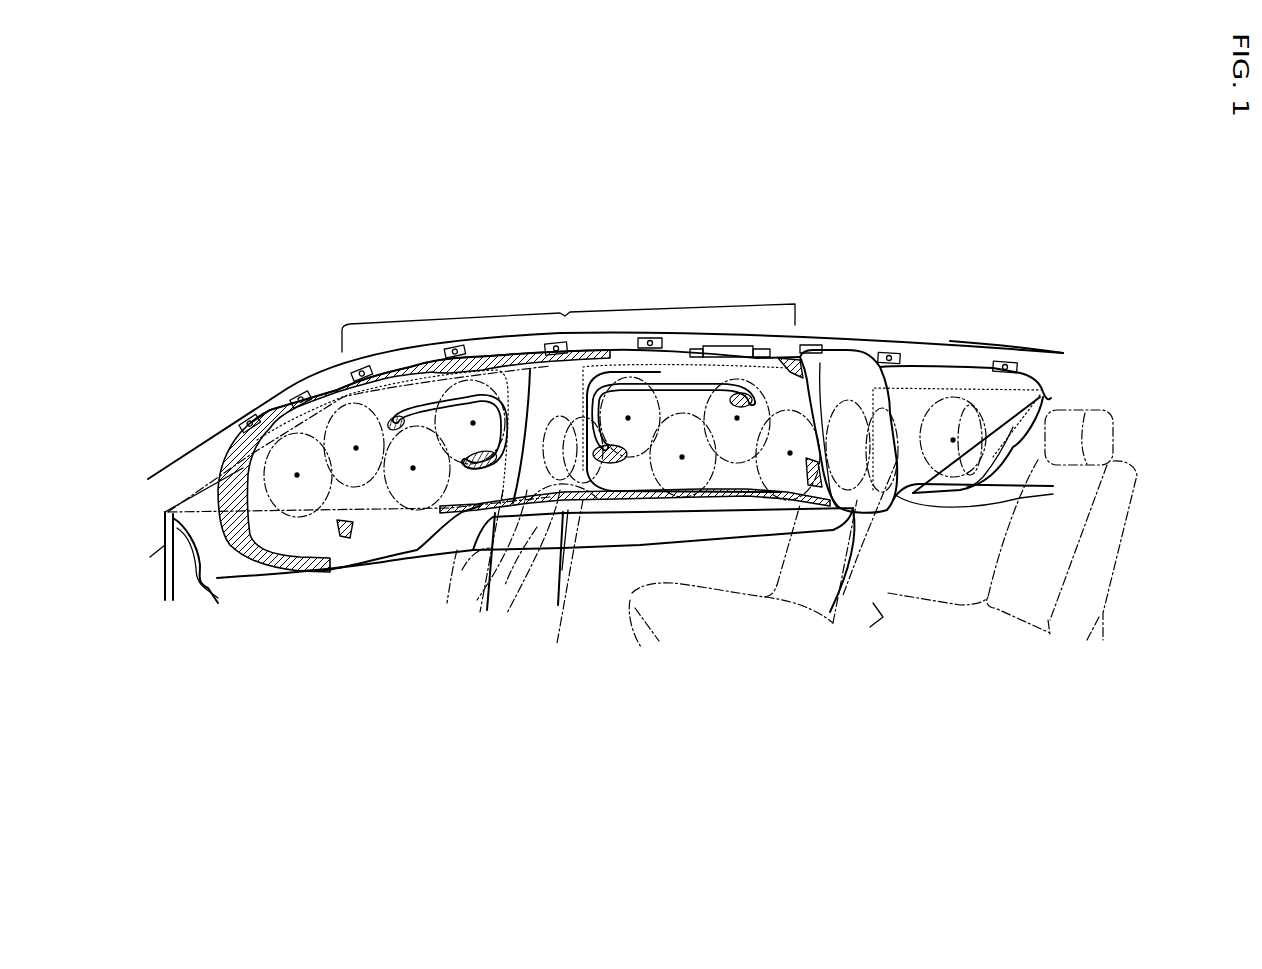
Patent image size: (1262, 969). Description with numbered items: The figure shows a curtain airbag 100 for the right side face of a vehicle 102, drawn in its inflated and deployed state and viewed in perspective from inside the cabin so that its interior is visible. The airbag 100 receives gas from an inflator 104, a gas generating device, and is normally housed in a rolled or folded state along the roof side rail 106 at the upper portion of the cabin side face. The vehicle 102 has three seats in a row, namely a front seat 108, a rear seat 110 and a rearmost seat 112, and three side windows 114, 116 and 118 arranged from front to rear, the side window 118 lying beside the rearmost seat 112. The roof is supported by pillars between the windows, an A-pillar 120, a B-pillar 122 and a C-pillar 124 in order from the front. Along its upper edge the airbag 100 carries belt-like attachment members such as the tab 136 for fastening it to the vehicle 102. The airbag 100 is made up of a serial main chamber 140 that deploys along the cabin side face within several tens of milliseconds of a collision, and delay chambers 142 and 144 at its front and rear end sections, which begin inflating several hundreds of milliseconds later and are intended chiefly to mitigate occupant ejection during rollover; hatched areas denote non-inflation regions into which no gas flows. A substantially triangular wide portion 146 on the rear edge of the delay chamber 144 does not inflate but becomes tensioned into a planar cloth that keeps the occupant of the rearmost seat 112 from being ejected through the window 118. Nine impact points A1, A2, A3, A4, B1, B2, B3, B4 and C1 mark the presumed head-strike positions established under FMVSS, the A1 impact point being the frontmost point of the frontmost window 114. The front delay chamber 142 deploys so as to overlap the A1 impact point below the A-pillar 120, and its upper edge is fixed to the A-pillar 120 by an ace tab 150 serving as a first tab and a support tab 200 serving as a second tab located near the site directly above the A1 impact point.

The curtain airbag 100 is at (273, 323).
The vehicle 102 is at (299, 666).
The inflator 104 is at (728, 352).
The roof side rail 106 is at (1005, 347).
The front seat 108 is at (568, 605).
The rear seat 110 is at (887, 590).
The rearmost seat 112 is at (1103, 627).
The side window 114 is at (370, 505).
The side window 116 is at (732, 511).
The side window 118 is at (1047, 399).
The A-pillar 120 is at (197, 452).
The B-pillar 122 is at (563, 572).
The C-pillar 124 is at (881, 645).
The tab 136 is at (880, 352).
The serial main chamber 140 is at (568, 319).
The delay chamber 142 is at (272, 407).
The delay chamber 144 is at (835, 358).
The wide portion 146 is at (957, 368).
The ace tab 150 is at (247, 418).
The support tab 200 is at (298, 388).
The A1 impact point A1 is at (298, 475).
The impact point A2 is at (417, 468).
The impact point A3 is at (354, 445).
The impact point A4 is at (470, 422).
The impact point B1 is at (683, 455).
The impact point B2 is at (788, 455).
The impact point B3 is at (630, 417).
The impact point B4 is at (737, 421).
The impact point C1 is at (953, 437).